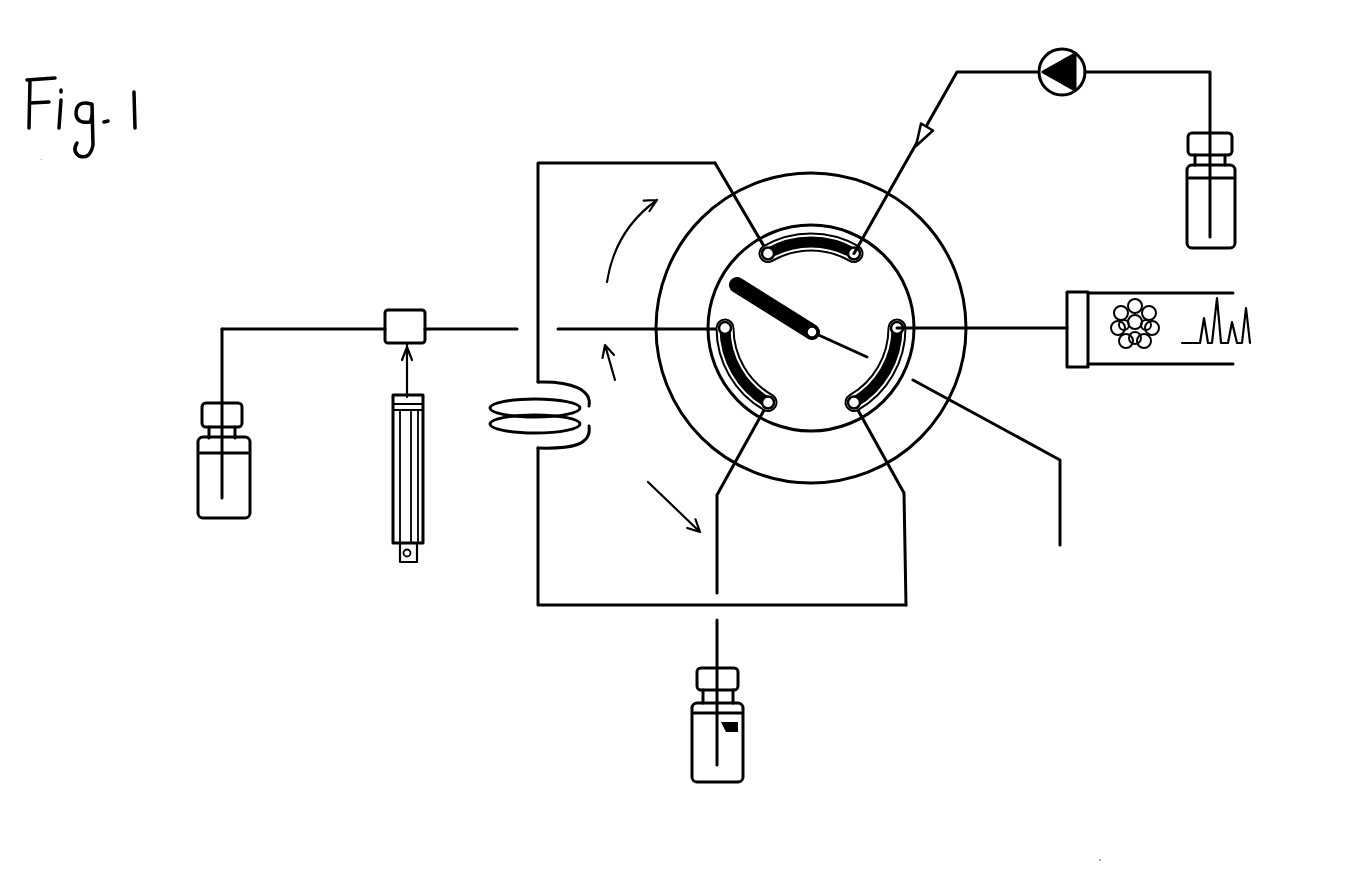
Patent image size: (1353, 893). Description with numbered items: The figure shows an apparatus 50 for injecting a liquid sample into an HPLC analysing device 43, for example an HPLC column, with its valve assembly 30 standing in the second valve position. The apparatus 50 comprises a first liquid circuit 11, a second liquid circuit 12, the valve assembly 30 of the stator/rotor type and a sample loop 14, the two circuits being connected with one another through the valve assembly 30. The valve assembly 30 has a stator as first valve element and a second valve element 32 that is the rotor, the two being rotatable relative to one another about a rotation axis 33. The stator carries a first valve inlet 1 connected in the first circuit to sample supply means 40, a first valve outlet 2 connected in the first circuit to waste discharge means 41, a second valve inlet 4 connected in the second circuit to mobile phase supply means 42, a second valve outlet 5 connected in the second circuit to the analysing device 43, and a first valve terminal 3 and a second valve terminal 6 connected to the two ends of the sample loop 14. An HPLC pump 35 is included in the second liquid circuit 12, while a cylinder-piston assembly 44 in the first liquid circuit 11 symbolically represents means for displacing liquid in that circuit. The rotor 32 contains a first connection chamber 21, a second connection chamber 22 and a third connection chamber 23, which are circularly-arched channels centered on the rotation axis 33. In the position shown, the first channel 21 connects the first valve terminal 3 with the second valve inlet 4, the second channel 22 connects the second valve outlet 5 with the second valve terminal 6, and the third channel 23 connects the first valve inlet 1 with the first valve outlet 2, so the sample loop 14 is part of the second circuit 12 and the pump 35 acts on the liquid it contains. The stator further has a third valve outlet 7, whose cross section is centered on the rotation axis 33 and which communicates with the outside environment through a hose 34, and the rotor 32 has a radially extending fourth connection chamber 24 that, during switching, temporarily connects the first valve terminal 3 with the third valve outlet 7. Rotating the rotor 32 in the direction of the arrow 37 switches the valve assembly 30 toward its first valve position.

The first valve inlet 1 is at (753, 409).
The first valve outlet 2 is at (716, 322).
The first valve terminal 3 is at (767, 243).
The second valve inlet 4 is at (866, 255).
The second valve outlet 5 is at (912, 342).
The second valve terminal 6 is at (851, 422).
The third valve outlet 7 is at (811, 342).
The first liquid circuit 11 is at (607, 430).
The second liquid circuit 12 is at (1018, 293).
The sample loop 14 is at (583, 140).
The first connection chamber 21 is at (824, 238).
The second connection chamber 22 is at (893, 387).
The third connection chamber 23 is at (717, 368).
The fourth connection chamber 24 is at (779, 305).
The valve assembly 30 is at (777, 95).
The second valve element 32 is at (828, 185).
The rotation axis 33 is at (819, 327).
The hose 34 is at (1003, 433).
The HPLC pump 35 is at (1055, 48).
The arrow 37 is at (608, 236).
The sample supply means 40 is at (773, 730).
The waste discharge means 41 is at (226, 545).
The mobile phase supply means 42 is at (1267, 213).
The HPLC analysing device 43 is at (1221, 390).
The cylinder-piston assembly 44 is at (412, 590).
The apparatus for injecting a liquid sample 50 is at (245, 783).